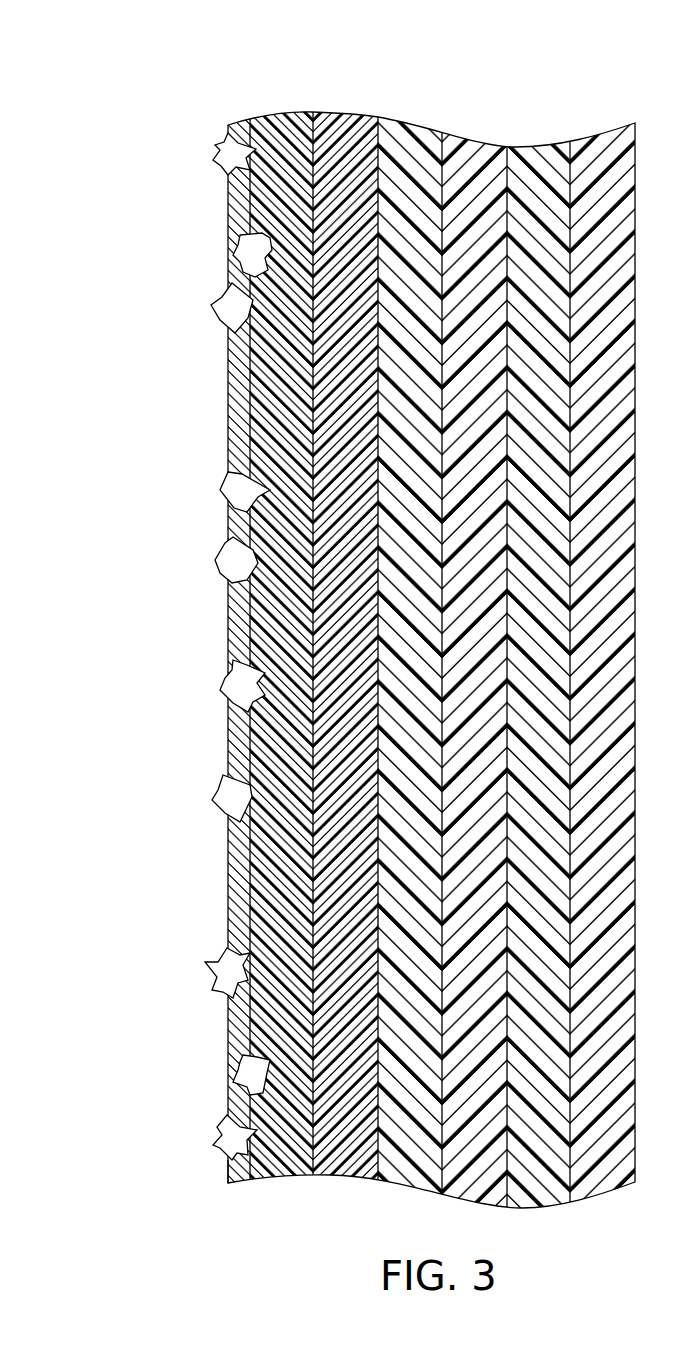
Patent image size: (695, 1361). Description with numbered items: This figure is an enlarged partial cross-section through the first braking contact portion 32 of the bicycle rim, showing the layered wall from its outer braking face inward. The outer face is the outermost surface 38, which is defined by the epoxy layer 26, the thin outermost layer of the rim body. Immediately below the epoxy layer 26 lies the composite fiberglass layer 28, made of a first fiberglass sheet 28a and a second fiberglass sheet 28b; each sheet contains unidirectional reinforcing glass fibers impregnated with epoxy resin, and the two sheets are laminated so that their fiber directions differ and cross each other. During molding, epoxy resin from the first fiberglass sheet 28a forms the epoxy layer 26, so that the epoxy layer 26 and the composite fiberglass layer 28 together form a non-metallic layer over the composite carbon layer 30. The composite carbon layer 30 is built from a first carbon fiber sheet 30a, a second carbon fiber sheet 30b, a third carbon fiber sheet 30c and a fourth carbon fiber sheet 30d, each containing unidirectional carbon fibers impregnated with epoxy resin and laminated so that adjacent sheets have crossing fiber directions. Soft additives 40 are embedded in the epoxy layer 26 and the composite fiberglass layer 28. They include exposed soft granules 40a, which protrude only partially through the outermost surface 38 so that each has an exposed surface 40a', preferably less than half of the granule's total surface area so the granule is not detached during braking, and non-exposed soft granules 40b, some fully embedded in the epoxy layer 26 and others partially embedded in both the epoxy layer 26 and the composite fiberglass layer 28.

The epoxy layer 26 is at (233, 127).
The composite fiberglass layer 28 is at (367, 55).
The first fiberglass sheet 28a is at (288, 140).
The second fiberglass sheet 28b is at (340, 140).
The composite carbon layer 30 is at (638, 55).
The first carbon fiber sheet 30a is at (414, 160).
The second carbon fiber sheet 30b is at (478, 170).
The third carbon fiber sheet 30c is at (540, 165).
The fourth carbon fiber sheet 30d is at (600, 150).
The first braking contact portion 32 is at (67, 160).
The outermost surface 38 is at (228, 1163).
The soft additives 40 is at (118, 122).
The exposed soft granules 40a is at (196, 647).
The exposed surface 40a' is at (180, 653).
The non-exposed soft granules 40b is at (230, 248).